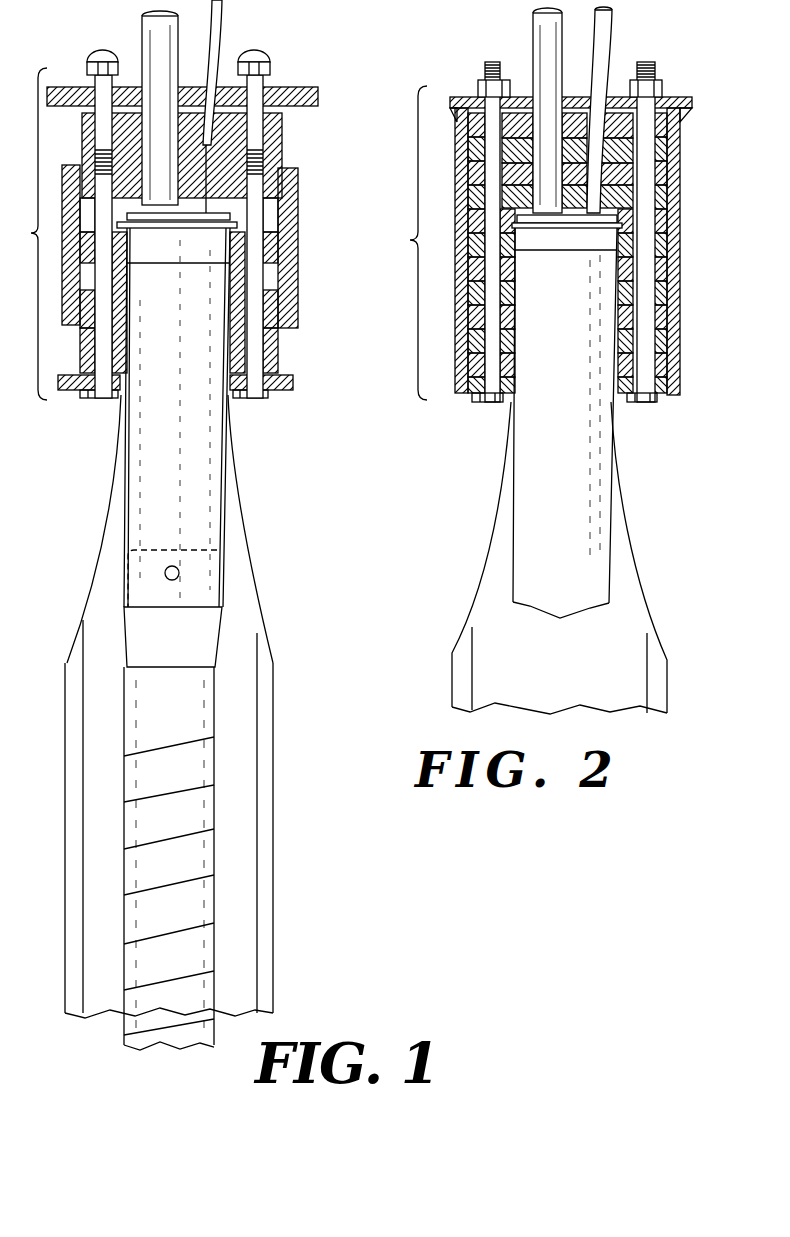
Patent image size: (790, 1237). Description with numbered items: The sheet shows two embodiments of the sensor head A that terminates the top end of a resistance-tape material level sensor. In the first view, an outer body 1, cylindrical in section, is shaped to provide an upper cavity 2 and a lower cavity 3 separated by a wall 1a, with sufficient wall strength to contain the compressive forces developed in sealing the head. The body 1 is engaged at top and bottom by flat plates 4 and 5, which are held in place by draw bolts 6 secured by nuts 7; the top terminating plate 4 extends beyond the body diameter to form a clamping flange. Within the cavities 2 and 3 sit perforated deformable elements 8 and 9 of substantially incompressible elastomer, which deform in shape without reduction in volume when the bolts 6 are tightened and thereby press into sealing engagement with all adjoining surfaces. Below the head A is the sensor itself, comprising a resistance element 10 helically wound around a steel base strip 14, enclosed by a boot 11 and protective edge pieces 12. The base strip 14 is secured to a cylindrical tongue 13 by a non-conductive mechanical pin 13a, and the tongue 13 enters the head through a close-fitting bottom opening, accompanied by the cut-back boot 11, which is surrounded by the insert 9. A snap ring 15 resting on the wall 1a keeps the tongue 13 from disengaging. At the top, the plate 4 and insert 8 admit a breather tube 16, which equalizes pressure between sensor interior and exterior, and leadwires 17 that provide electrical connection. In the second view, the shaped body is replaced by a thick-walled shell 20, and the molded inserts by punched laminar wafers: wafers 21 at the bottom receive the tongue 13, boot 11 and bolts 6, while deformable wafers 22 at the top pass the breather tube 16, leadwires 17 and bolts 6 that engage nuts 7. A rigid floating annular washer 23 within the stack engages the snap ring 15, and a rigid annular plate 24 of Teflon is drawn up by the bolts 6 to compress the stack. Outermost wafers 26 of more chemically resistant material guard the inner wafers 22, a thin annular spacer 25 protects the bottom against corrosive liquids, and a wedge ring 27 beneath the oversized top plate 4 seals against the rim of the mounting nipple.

In FIG. 1, the outer body 1 is at (291, 244).
In FIG. 1, the wall 1a is at (227, 254).
In FIG. 1, the upper cavity 2 is at (272, 217).
In FIG. 1, the lower cavity 3 is at (272, 279).
In FIG. 1, the top terminating plate 4 is at (320, 97).
In FIG. 2, the top terminating plate 4 is at (692, 105).
In FIG. 1, the bottom plate 5 is at (293, 383).
In FIG. 1, the draw bolts 6 is at (258, 399).
In FIG. 2, the draw bolts 6 is at (483, 404).
In FIG. 1, the nuts 7 is at (88, 58).
In FIG. 2, the nuts 7 is at (480, 85).
In FIG. 1, the deformable element 8 is at (277, 137).
In FIG. 1, the deformable element 9 is at (276, 353).
In FIG. 1, the resistance element 10 is at (168, 794).
In FIG. 1, the boot 11 is at (245, 637).
In FIG. 2, the boot 11 is at (630, 655).
In FIG. 1, the protective edge pieces 12 is at (272, 858).
In FIG. 1, the cylindrical tongue 13 is at (200, 479).
In FIG. 2, the cylindrical tongue 13 is at (592, 540).
In FIG. 1, the non-conductive mechanical pin 13a is at (164, 573).
In FIG. 1, the steel base strip 14 is at (200, 699).
In FIG. 1, the snap ring 15 is at (150, 229).
In FIG. 2, the snap ring 15 is at (543, 228).
In FIG. 1, the breather tube 16 is at (150, 31).
In FIG. 2, the breather tube 16 is at (543, 31).
In FIG. 1, the leadwires 17 is at (221, 24).
In FIG. 2, the leadwires 17 is at (612, 34).
In FIG. 2, the shell 20 is at (681, 270).
In FIG. 2, the wafers 21 is at (668, 375).
In FIG. 2, the deformable wafers 22 is at (678, 180).
In FIG. 2, the rigid floating annular washer 23 is at (663, 233).
In FIG. 2, the rigid annular plate 24 is at (657, 402).
In FIG. 2, the thin annular spacer 25 is at (468, 365).
In FIG. 2, the wafers 26 is at (459, 128).
In FIG. 2, the wedge ring 27 is at (688, 118).
In FIG. 1, the sensor head A is at (29, 234).
In FIG. 2, the sensor head A is at (409, 243).